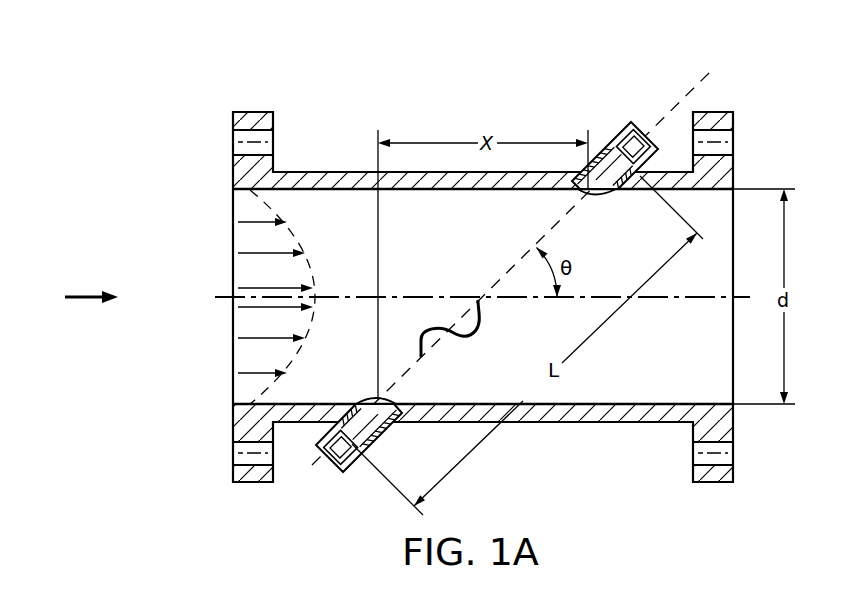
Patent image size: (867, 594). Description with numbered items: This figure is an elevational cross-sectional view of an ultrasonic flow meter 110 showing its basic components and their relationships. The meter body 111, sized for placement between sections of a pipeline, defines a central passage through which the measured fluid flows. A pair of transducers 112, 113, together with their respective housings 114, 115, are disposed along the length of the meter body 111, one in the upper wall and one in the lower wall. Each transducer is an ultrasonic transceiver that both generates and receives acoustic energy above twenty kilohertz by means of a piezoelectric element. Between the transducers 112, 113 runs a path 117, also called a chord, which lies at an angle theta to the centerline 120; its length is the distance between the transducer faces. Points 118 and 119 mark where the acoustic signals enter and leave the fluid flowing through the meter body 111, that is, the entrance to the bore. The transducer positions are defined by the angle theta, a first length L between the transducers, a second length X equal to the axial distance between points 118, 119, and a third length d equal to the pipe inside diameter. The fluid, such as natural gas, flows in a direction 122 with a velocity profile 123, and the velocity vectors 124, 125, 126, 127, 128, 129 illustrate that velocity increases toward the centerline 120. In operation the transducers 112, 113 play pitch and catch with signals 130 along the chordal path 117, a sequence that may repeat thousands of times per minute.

The ultrasonic flow meter 110 is at (709, 43).
The meter body 111 is at (255, 112).
The transducer 112 is at (628, 120).
The transducer 113 is at (321, 466).
The housing 114 is at (606, 142).
The housing 115 is at (373, 447).
The path 117 is at (503, 282).
The point 118 is at (590, 193).
The point 119 is at (375, 398).
The centerline 120 is at (661, 299).
The flow direction 122 is at (86, 270).
The velocity profile 123 is at (306, 244).
The velocity vector 124 is at (284, 221).
The velocity vector 125 is at (303, 255).
The velocity vector 126 is at (310, 290).
The velocity vector 127 is at (310, 305).
The velocity vector 128 is at (303, 340).
The velocity vector 129 is at (284, 375).
The signal 130 is at (467, 338).